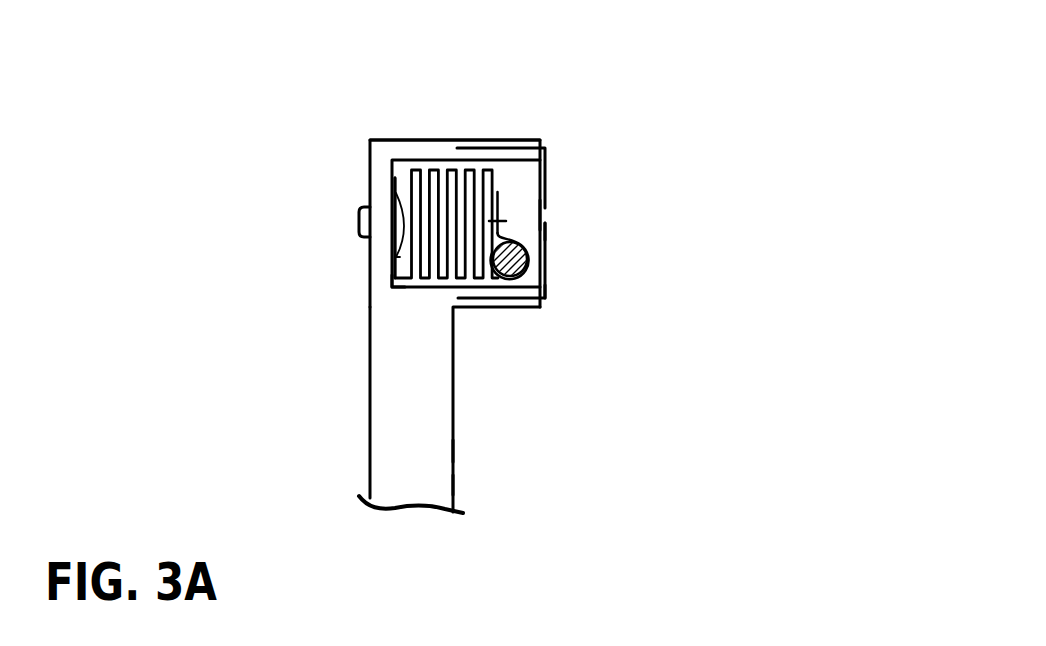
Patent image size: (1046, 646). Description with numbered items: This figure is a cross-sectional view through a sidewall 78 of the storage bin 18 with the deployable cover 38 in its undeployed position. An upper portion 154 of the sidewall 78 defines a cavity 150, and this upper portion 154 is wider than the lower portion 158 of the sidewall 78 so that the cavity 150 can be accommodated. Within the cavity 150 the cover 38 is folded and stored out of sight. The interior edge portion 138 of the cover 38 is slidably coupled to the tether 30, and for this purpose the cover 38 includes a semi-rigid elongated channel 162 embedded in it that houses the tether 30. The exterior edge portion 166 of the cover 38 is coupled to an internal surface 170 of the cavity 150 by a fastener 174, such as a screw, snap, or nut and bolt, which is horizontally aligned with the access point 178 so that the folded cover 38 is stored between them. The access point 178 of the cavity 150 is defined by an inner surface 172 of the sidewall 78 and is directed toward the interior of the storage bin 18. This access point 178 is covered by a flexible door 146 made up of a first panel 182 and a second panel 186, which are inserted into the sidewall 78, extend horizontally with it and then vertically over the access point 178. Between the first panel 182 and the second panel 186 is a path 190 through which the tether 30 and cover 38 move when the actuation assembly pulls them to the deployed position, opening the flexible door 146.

The storage bin 18 is at (584, 165).
The tether 30 is at (507, 262).
The cover 38 is at (415, 178).
The sidewall 78 is at (395, 450).
The interior edge portion 138 is at (506, 221).
The flexible door 146 is at (563, 285).
The cavity 150 is at (514, 174).
The upper portion 154 is at (358, 165).
The lower portion 158 is at (466, 453).
The elongated channel 162 is at (523, 240).
The exterior edge portion 166 is at (390, 287).
The internal surface 170 is at (394, 177).
The inner surface 172 is at (457, 485).
The fastener 174 is at (358, 226).
The access point 178 is at (562, 204).
The first panel 182 is at (547, 156).
The second panel 186 is at (548, 290).
The path 190 is at (562, 228).